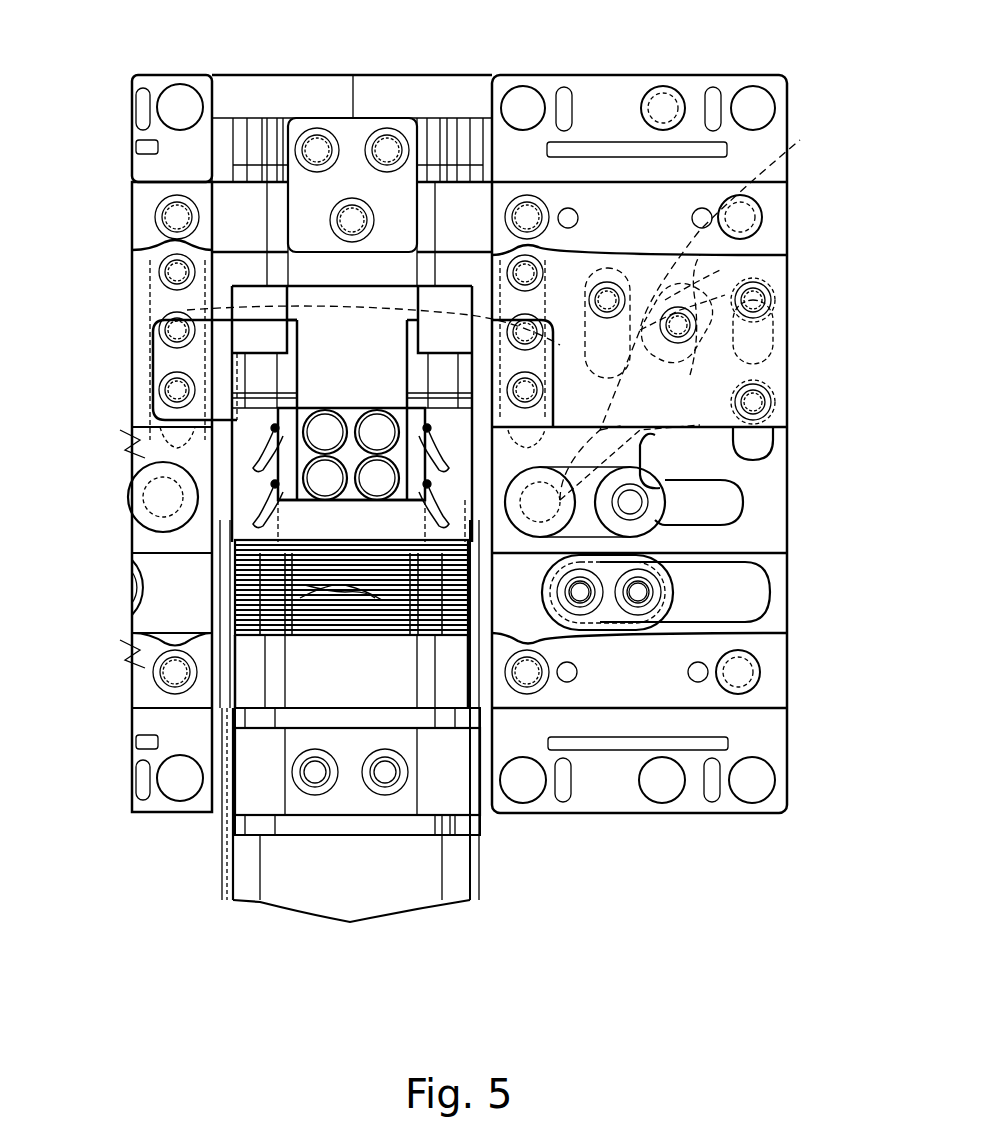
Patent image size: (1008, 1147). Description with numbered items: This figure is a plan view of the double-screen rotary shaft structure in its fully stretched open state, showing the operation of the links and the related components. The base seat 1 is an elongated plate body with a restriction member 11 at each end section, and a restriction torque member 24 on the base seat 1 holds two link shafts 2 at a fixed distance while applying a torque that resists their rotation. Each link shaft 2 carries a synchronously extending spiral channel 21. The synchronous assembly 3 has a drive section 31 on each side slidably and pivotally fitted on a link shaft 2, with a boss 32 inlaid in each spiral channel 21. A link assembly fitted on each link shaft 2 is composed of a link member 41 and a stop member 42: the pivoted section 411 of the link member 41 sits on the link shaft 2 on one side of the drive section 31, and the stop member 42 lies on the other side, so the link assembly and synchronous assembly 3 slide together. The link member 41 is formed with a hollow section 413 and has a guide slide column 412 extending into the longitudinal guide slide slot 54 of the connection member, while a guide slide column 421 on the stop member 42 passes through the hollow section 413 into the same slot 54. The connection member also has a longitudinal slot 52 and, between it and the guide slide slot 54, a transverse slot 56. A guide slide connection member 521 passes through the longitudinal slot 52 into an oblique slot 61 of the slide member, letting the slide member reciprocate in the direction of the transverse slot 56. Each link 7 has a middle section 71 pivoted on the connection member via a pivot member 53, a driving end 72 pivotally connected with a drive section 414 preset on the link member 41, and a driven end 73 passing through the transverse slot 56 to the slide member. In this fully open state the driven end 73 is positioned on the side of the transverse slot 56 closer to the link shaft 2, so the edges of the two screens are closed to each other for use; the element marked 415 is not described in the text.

The base seat 1 is at (343, 865).
The link shaft 2 is at (445, 825).
The synchronous assembly 3 is at (358, 375).
The link 7 is at (700, 200).
The restriction member 11 is at (318, 190).
The spiral channel 21 is at (325, 434).
The restriction torque member 24 is at (302, 588).
The drive section 31 is at (505, 318).
The boss 32 is at (272, 429).
The link member 41 is at (617, 297).
The stop member 42 is at (503, 352).
The longitudinal slot 52 is at (753, 343).
The pivot member 53 is at (690, 300).
The longitudinal guide slide slot 54 is at (425, 412).
The transverse slot 56 is at (712, 495).
The oblique slot 61 is at (700, 424).
The middle section 71 is at (705, 255).
The driving end 72 is at (652, 267).
The driven end 73 is at (640, 512).
The pivoted section 411 is at (427, 272).
The guide slide column 412 is at (522, 212).
The hollow section 413 is at (200, 320).
The drive section 414 is at (607, 300).
The bolt 415 is at (773, 303).
The guide slide column 421 is at (415, 275).
The guide slide connection member 521 is at (753, 300).